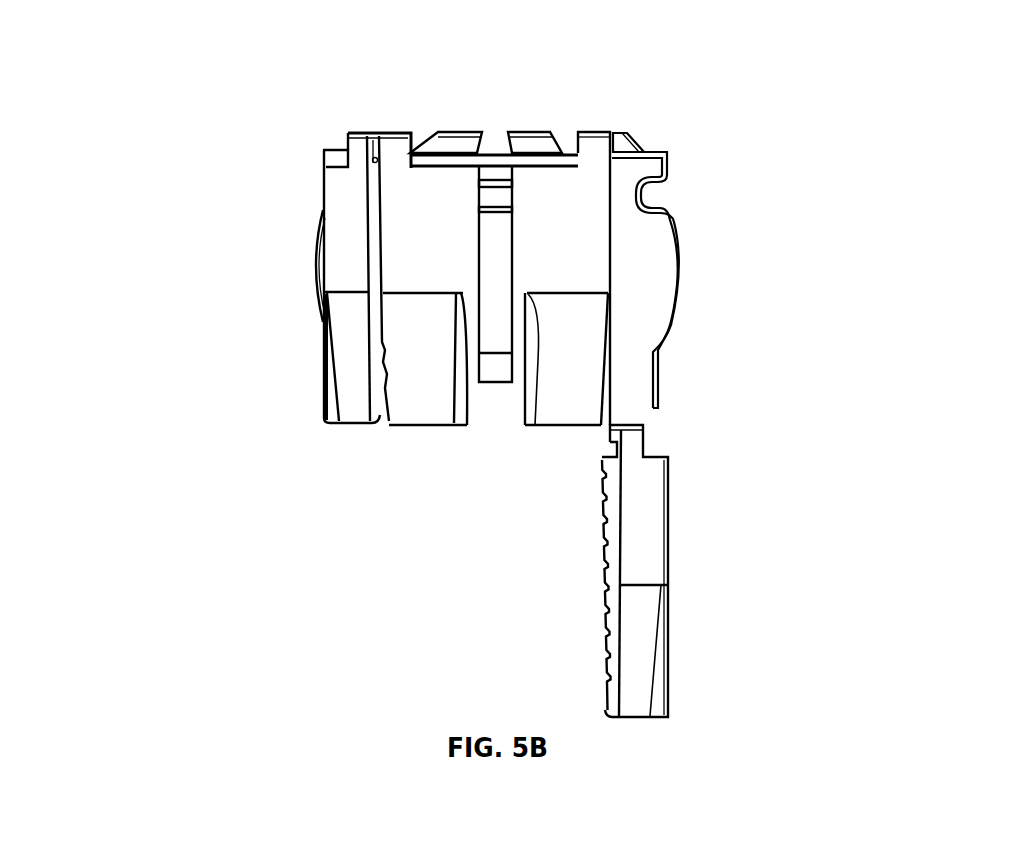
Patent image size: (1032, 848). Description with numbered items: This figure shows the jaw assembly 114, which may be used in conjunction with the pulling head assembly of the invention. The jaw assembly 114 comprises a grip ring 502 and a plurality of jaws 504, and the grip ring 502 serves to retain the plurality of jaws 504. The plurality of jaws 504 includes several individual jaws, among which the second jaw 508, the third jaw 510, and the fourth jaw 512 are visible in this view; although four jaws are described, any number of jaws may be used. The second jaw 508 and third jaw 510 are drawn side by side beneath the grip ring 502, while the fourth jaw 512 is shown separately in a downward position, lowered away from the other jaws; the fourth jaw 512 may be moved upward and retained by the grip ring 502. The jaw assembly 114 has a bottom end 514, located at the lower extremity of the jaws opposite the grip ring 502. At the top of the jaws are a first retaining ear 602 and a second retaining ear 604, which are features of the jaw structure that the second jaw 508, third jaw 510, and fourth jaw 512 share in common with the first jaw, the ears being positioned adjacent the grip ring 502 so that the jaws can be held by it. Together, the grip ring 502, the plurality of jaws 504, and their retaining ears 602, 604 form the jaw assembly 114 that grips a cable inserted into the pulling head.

The jaw assembly 114 is at (637, 40).
The plurality of jaws 504 is at (294, 61).
The grip ring 502 is at (665, 160).
The second jaw 508 is at (345, 418).
The third jaw 510 is at (505, 420).
The fourth jaw 512 is at (668, 521).
The bottom end 514 is at (420, 466).
The first retaining ear 602 is at (403, 132).
The second retaining ear 604 is at (603, 135).